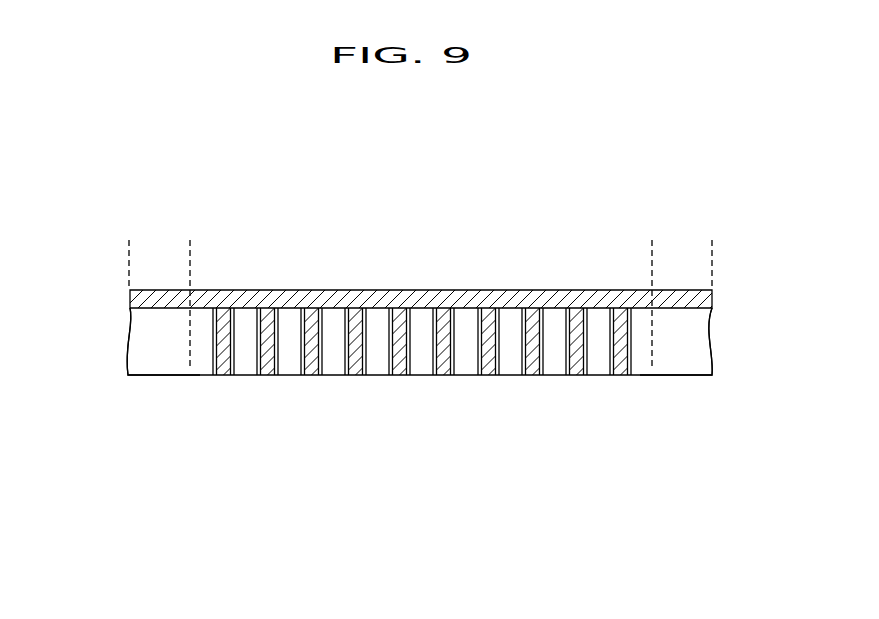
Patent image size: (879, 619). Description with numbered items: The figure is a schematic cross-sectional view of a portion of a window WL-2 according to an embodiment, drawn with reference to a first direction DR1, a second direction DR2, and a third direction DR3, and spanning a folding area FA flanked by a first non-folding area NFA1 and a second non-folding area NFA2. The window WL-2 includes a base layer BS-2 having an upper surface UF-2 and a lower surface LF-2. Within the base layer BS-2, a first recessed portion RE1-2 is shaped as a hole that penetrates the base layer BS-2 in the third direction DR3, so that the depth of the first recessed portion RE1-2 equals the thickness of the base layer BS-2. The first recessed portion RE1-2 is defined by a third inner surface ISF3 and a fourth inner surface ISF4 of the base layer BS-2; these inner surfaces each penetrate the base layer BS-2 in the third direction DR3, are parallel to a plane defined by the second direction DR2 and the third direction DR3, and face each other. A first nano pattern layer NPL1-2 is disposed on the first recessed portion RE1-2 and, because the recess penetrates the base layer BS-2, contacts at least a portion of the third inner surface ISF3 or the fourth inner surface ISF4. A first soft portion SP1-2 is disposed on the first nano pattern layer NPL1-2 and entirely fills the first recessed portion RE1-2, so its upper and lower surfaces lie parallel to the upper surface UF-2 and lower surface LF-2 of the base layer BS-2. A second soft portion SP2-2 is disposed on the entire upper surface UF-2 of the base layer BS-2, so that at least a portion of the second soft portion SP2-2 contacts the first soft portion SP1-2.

The window WL-2 is at (622, 176).
The upper surface UF-2 is at (130, 295).
The lower surface LF-2 is at (150, 376).
The second soft portion SP2-2 is at (712, 296).
The base layer BS-2 is at (700, 342).
The third inner surface ISF3 is at (216, 362).
The fourth inner surface ISF4 is at (232, 348).
The first recessed portion RE1-2 is at (359, 363).
The first soft portion SP1-2 is at (443, 362).
The first nano pattern layer NPL1-2 is at (618, 420).
The first non-folding area NFA1 is at (190, 247).
The folding area FA is at (652, 247).
The second non-folding area NFA2 is at (712, 247).
The first direction DR1 is at (80, 555).
The second direction DR2 is at (78, 550).
The third direction DR3 is at (73, 548).